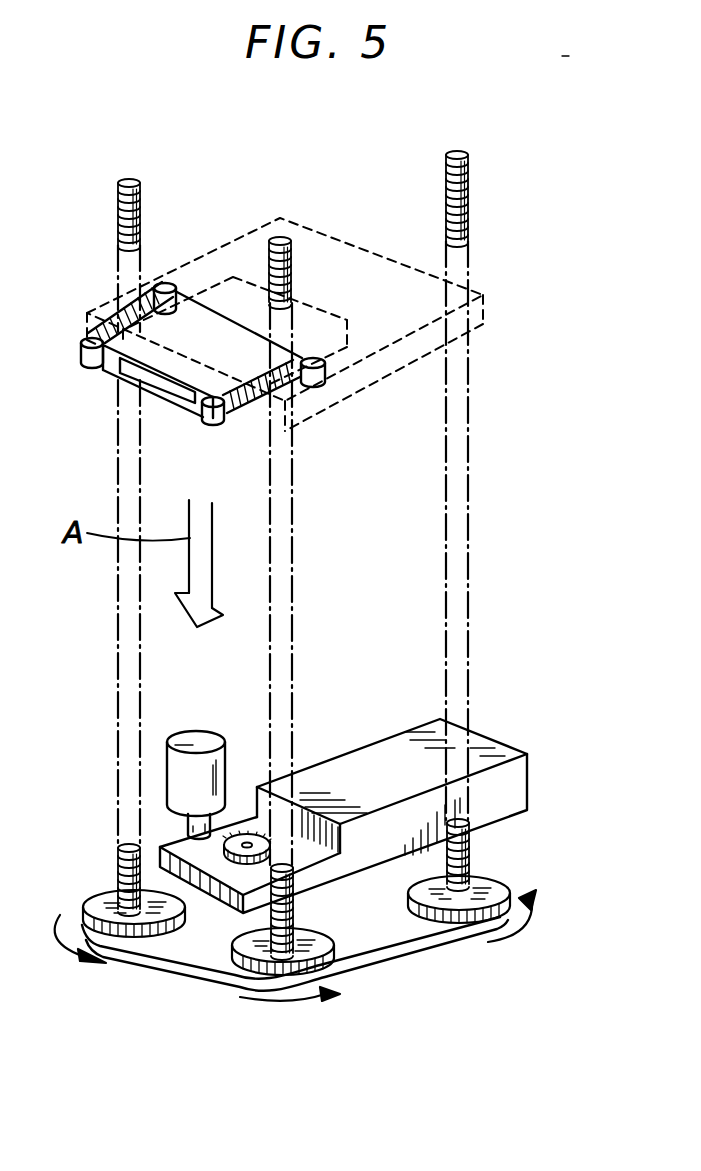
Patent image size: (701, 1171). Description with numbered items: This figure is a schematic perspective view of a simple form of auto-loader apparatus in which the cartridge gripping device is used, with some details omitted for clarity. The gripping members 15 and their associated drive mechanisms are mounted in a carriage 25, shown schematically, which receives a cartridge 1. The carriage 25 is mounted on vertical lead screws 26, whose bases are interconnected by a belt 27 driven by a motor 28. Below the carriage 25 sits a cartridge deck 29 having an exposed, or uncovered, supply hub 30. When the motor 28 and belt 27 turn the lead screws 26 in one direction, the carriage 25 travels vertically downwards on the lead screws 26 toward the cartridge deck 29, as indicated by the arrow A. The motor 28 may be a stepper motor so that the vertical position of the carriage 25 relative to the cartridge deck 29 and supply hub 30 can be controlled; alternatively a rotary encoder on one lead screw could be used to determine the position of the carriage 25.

The cartridge 1 is at (168, 339).
The gripping members 15 is at (132, 300).
The carriage 25 is at (330, 233).
The lead screws 26 is at (138, 182).
The belt 27 is at (250, 973).
The motor 28 is at (173, 762).
The cartridge deck 29 is at (490, 745).
The supply hub 30 is at (233, 833).